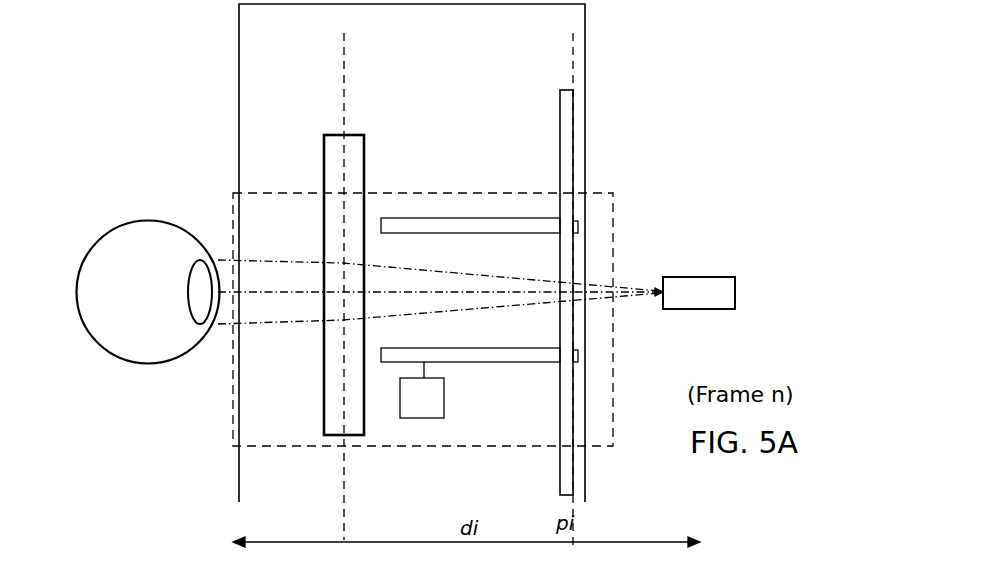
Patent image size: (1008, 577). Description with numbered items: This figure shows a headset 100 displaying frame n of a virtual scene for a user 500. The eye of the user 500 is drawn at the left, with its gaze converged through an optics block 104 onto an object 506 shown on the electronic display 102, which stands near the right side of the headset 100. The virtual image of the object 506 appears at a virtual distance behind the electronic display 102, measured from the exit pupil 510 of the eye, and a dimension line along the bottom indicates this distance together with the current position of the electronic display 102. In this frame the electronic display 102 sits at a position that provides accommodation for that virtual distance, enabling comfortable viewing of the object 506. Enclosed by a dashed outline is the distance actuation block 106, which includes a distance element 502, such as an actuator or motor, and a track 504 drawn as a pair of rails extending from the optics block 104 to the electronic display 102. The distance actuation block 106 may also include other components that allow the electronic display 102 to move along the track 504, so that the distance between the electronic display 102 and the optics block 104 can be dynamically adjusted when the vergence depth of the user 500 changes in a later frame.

The headset 100 is at (582, 32).
The electronic display 102 is at (565, 118).
The optics block 104 is at (343, 153).
The distance actuation block 106 is at (230, 218).
The user 500 is at (87, 255).
The distance element 502 is at (424, 400).
The track 504 is at (533, 357).
The object 506 is at (698, 275).
The exit pupil 510 is at (223, 348).